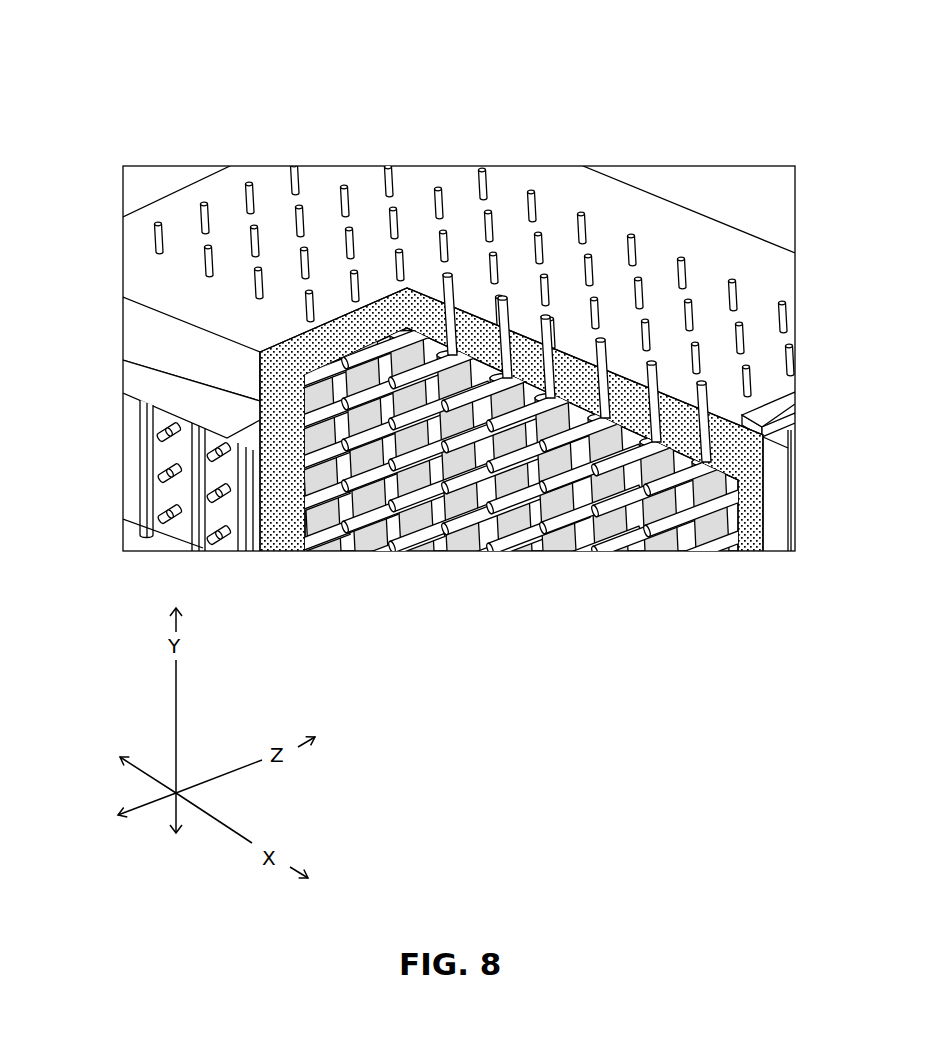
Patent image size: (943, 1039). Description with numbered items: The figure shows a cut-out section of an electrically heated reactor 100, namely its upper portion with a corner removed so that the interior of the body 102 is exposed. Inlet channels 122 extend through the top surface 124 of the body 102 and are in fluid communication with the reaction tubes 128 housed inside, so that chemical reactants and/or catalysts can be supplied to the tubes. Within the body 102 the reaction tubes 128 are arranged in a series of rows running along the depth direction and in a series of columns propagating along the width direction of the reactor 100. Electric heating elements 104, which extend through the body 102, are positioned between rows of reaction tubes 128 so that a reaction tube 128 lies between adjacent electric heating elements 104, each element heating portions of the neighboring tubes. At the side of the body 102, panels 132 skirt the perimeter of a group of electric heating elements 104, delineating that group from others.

The reactor 100 is at (218, 64).
The body 102 is at (256, 382).
The electric heating elements 104 is at (151, 462).
The inlet channels 122 is at (432, 187).
The top surface 124 is at (664, 220).
The reaction tubes 128 is at (363, 558).
The panels 132 is at (138, 380).